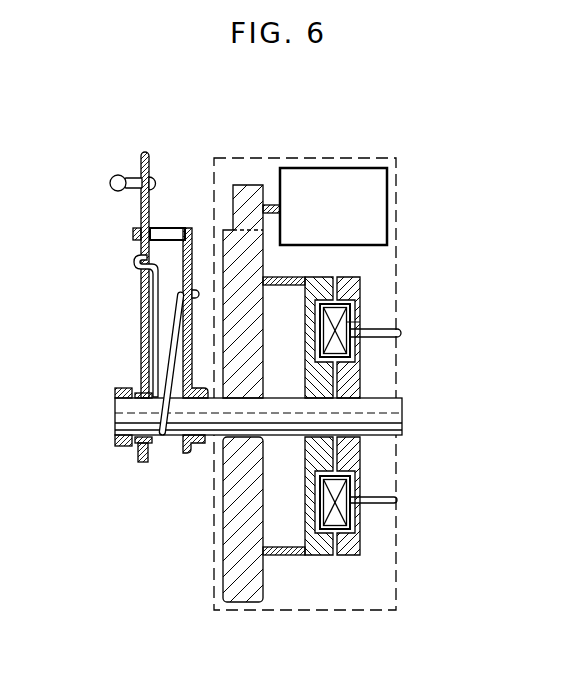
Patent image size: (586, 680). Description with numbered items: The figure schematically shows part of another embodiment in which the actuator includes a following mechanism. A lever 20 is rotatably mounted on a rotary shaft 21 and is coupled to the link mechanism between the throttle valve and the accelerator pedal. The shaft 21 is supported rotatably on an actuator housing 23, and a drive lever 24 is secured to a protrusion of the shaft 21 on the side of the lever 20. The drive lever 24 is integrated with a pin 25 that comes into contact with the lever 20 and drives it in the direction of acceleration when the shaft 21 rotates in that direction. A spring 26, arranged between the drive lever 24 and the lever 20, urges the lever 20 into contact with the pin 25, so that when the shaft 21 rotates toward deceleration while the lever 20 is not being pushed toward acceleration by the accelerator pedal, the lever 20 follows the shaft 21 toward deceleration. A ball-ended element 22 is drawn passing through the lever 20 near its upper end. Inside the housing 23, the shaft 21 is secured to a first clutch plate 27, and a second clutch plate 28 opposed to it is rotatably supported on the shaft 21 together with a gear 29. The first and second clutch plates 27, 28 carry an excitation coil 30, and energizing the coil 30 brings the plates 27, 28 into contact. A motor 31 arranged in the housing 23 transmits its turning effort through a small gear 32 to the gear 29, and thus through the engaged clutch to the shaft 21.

The lever 20 is at (144, 152).
The rotary shaft 21 is at (403, 413).
The ball-ended pin 22 is at (110, 183).
The actuator housing 23 is at (360, 157).
The drive lever 24 is at (198, 447).
The pin 25 is at (133, 236).
The spring 26 is at (168, 331).
The first clutch plate 27 is at (350, 545).
The second clutch plate 28 is at (314, 557).
The gear 29 is at (240, 602).
The excitation coil 30 is at (347, 318).
The motor 31 is at (313, 185).
The small gear 32 is at (247, 186).